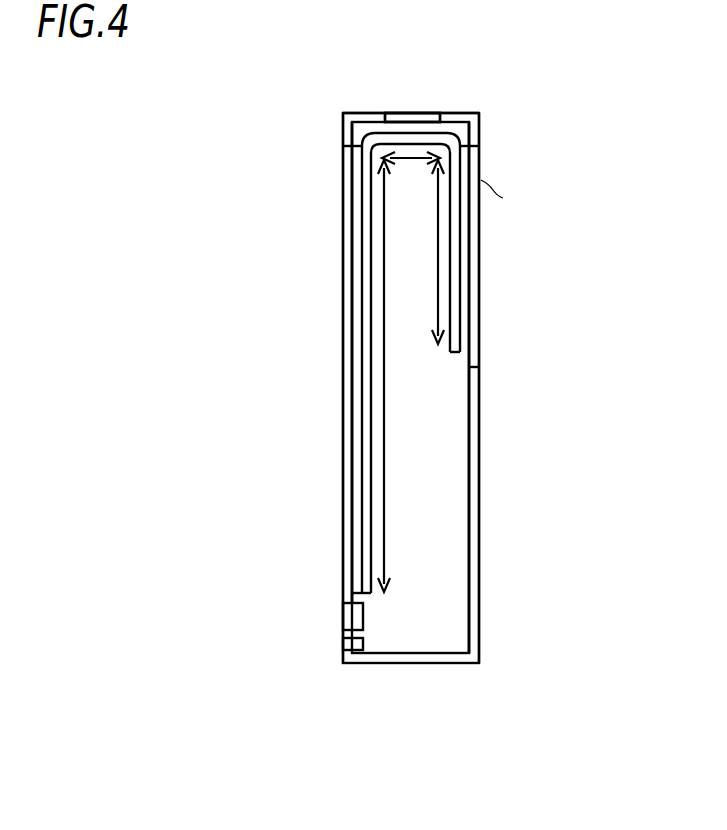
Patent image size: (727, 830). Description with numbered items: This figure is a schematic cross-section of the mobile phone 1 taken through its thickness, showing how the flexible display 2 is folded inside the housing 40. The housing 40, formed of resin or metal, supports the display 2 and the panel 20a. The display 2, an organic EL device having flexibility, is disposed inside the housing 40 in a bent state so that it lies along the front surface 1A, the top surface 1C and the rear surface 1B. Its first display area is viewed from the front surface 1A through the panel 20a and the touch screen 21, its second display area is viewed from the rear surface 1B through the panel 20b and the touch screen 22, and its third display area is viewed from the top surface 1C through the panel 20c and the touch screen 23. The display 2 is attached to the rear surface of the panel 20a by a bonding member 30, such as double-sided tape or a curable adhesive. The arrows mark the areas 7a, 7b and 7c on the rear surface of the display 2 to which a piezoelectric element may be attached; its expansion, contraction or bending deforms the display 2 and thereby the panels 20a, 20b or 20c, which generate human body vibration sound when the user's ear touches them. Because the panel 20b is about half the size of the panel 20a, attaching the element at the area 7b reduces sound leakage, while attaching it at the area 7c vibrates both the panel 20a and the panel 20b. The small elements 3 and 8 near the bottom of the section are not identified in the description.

The mobile phone 1 is at (513, 137).
The front surface 1A is at (343, 388).
The rear surface 1B is at (479, 512).
The top surface 1C is at (467, 113).
The display 2 is at (366, 542).
The feed point 3 is at (343, 616).
The area 7a is at (385, 417).
The area 7b is at (435, 287).
The area 7c is at (410, 160).
The ground connection 8 is at (343, 646).
The panel 20a is at (353, 199).
The panel 20b is at (473, 285).
The panel 20c is at (412, 118).
The touch screen 21 is at (330, 362).
The touch screen 22 is at (516, 387).
The touch screen 23 is at (412, 92).
The bonding member 30 is at (365, 276).
The housing 40 is at (478, 407).